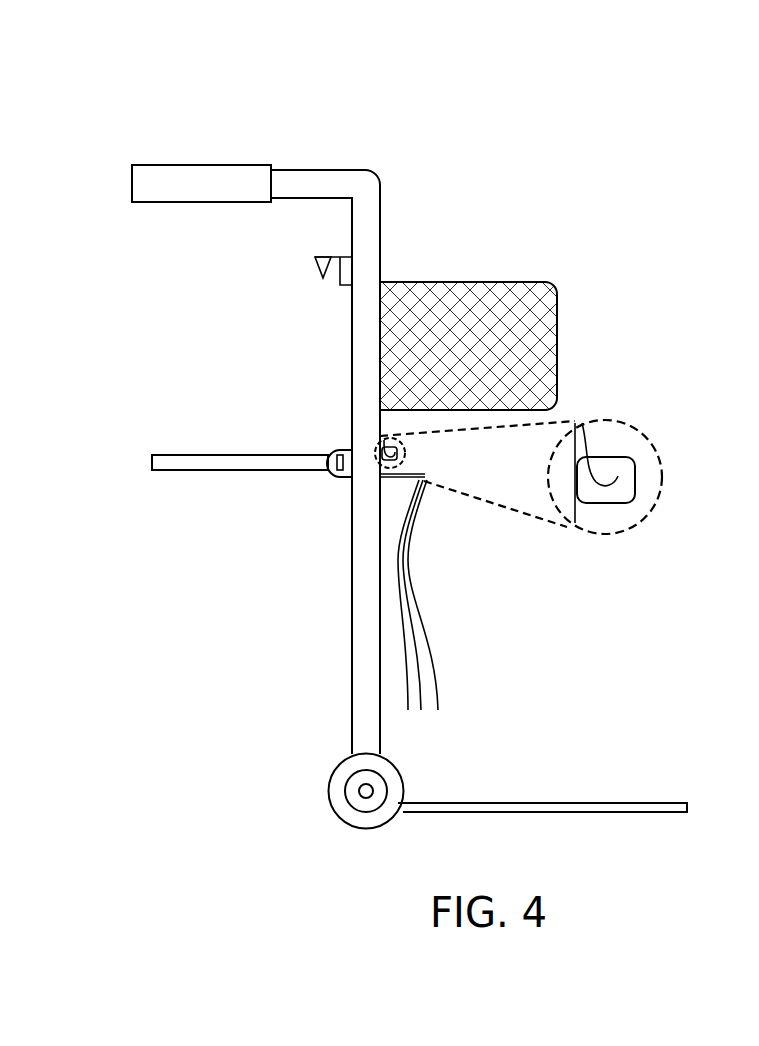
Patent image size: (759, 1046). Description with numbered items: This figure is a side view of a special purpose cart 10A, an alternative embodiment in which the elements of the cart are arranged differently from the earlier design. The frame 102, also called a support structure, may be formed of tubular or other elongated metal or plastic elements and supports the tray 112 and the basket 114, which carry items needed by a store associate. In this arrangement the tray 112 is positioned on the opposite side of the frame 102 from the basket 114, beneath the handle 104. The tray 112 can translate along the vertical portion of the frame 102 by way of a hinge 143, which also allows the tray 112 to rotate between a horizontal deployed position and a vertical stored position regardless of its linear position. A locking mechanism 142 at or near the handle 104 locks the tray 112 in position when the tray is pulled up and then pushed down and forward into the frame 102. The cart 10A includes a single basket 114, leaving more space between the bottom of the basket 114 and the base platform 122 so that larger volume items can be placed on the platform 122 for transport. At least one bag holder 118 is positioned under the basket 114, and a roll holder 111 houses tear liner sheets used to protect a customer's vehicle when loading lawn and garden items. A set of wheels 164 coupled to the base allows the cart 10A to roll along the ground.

The special purpose cart 10A is at (543, 167).
The frame 102 is at (352, 641).
The handle 104 is at (198, 165).
The locking mechanism 142 is at (315, 262).
The basket 114 is at (505, 282).
The tray 112 is at (245, 455).
The hinge 143 is at (336, 450).
The roll holder 111 is at (402, 453).
The bag holder 118 is at (425, 464).
The wheels 164 is at (329, 791).
The platform 122 is at (545, 803).